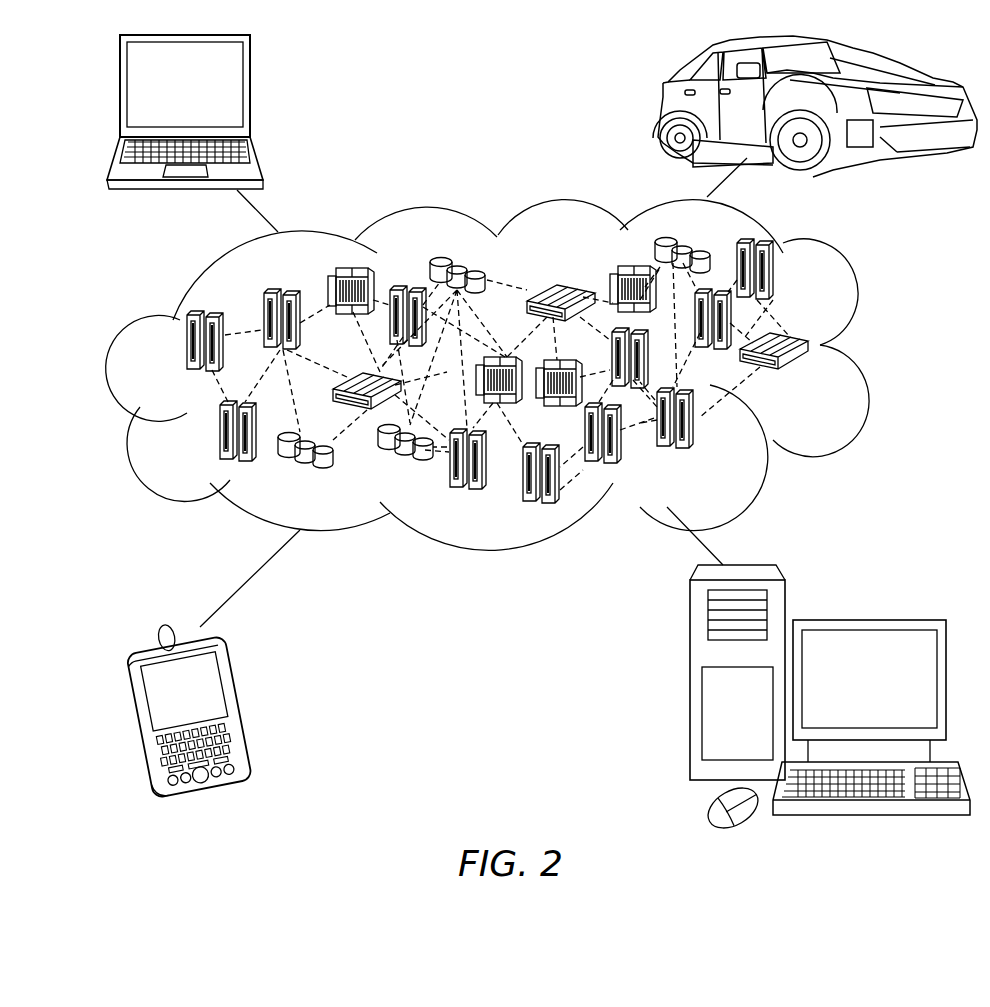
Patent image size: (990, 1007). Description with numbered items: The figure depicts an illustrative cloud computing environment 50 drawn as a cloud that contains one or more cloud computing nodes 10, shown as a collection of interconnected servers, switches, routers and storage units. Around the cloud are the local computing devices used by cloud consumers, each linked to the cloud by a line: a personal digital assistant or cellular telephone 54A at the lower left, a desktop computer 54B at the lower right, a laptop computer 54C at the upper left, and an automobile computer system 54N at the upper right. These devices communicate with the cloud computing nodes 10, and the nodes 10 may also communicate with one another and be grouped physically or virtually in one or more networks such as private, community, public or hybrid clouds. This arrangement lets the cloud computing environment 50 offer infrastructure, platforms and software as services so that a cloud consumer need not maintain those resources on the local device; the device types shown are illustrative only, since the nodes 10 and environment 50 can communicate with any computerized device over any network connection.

The cloud computing environment 50 is at (872, 347).
The cloud computing nodes 10 is at (812, 378).
The personal digital assistant or cellular telephone 54A is at (240, 712).
The desktop computer 54B is at (868, 620).
The laptop computer 54C is at (250, 92).
The automobile computer system 54N is at (660, 104).